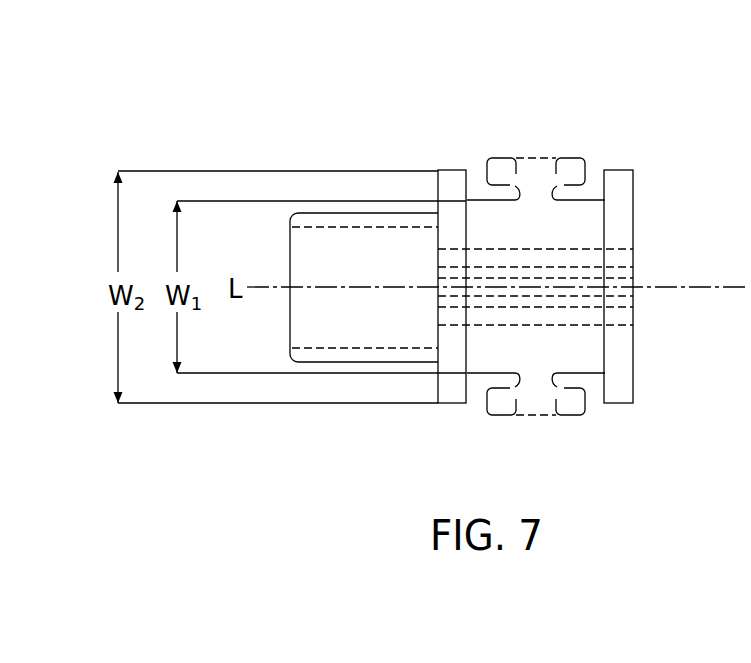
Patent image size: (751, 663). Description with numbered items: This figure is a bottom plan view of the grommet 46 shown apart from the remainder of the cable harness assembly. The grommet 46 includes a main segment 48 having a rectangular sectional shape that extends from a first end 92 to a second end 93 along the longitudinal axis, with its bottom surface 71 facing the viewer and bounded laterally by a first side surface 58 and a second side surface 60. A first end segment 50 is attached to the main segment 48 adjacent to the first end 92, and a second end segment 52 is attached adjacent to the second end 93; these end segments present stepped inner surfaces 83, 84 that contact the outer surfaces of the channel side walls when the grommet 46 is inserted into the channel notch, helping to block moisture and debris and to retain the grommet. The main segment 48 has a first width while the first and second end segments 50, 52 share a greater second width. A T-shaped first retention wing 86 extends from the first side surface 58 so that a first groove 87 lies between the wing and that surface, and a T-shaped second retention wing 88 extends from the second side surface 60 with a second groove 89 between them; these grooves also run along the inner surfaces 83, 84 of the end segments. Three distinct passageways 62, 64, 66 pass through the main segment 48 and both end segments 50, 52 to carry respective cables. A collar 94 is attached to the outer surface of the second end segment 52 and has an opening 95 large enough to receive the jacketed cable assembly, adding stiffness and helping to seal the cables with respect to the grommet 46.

The grommet 46 is at (379, 122).
The main segment 48 is at (584, 206).
The first end segment 50 is at (632, 203).
The second end segment 52 is at (452, 188).
The first side surface 58 is at (482, 200).
The second side surface 60 is at (485, 378).
The passageway 62 is at (630, 260).
The passageway 64 is at (633, 297).
The passageway 66 is at (633, 320).
The bottom surface 71 is at (565, 239).
The inner surface 83 is at (602, 218).
The inner surface 84 is at (468, 228).
The first retention wing 86 is at (541, 172).
The first groove 87 is at (513, 190).
The second retention wing 88 is at (542, 416).
The second groove 89 is at (508, 392).
The first end 92 is at (603, 354).
The second end 93 is at (470, 352).
The collar 94 is at (314, 220).
The opening 95 is at (318, 348).